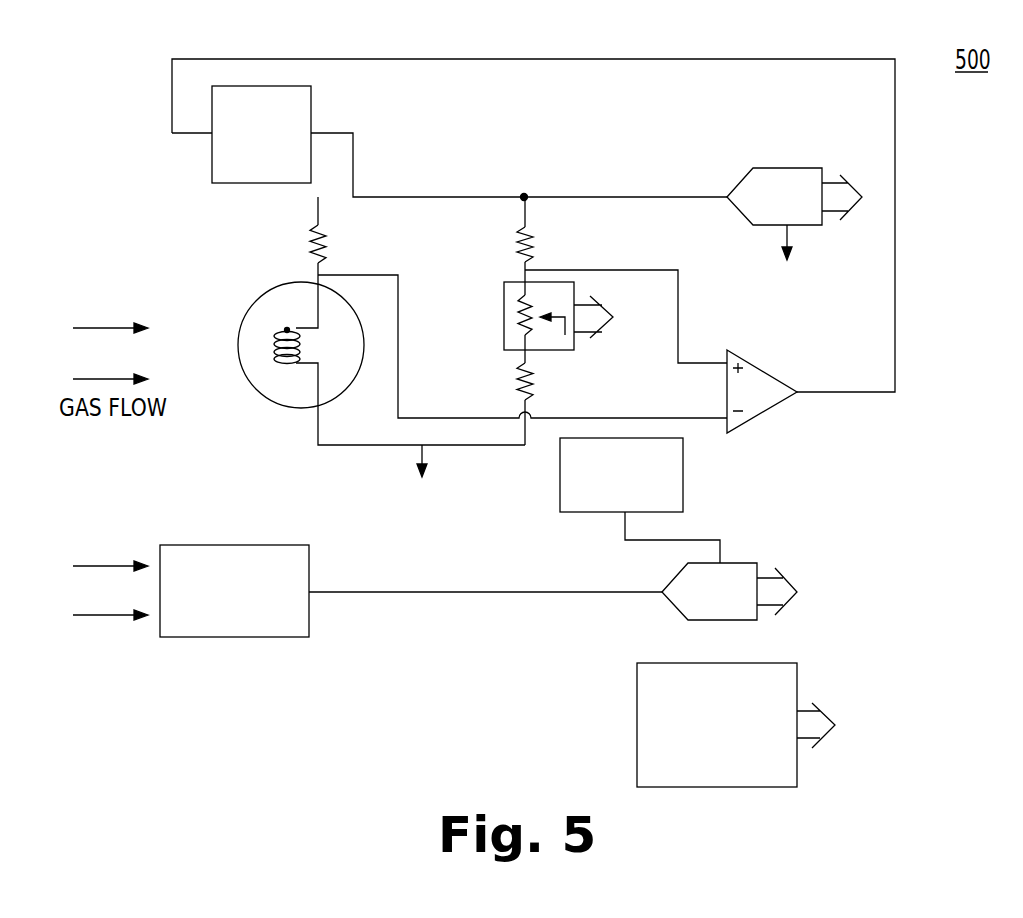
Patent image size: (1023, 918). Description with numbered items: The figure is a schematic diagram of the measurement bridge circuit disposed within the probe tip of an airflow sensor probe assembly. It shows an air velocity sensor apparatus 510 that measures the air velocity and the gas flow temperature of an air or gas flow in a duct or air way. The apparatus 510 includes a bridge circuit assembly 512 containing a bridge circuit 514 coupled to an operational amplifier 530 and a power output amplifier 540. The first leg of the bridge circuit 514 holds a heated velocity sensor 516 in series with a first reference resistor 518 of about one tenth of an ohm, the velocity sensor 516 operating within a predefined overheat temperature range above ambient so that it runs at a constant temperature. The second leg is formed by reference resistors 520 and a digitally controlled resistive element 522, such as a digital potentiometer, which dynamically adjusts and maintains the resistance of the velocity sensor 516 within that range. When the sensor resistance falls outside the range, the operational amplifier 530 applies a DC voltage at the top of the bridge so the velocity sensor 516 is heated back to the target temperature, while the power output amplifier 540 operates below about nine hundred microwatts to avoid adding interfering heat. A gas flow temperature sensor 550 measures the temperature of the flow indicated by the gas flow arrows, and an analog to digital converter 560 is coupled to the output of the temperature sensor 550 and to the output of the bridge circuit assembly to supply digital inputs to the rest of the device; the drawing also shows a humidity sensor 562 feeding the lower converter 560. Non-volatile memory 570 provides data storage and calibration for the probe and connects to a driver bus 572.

The air velocity sensor apparatus 510 is at (106, 24).
The bridge circuit assembly 512 is at (242, 46).
The bridge circuit 514 is at (460, 176).
The heated velocity sensor 516 is at (238, 336).
The first reference resistor 518 is at (316, 247).
The reference resistors 520 is at (522, 241).
The digitally controlled resistive element 522 is at (574, 290).
The operational amplifier 530 is at (768, 412).
The power output amplifier 540 is at (212, 165).
The gas flow temperature sensor 550 is at (232, 637).
The analog to digital converter 560 is at (748, 172).
The humidity sensor 562 is at (560, 490).
The non-volatile memory 570 is at (637, 695).
The driver bus 572 is at (800, 710).